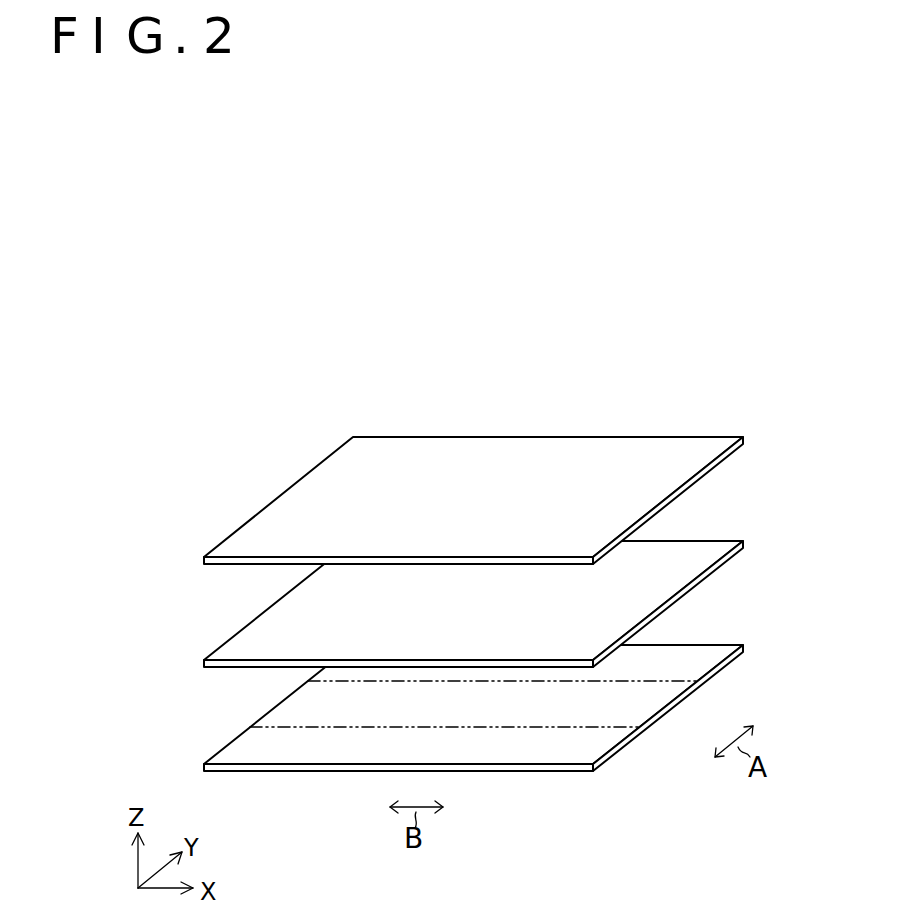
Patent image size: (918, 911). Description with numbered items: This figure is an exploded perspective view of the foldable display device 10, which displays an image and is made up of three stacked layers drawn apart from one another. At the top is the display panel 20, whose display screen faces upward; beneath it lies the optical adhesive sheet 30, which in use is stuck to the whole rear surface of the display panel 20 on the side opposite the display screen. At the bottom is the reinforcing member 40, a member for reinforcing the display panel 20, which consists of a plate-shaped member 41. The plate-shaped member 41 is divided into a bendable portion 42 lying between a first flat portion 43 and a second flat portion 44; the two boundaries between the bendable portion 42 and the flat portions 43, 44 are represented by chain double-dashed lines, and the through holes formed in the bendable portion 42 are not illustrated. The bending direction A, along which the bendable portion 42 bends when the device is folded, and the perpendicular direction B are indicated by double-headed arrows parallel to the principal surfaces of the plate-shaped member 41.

The display device 10 is at (339, 403).
The display panel 20 is at (697, 450).
The optical adhesive sheet 30 is at (697, 553).
The reinforcing member 40 is at (740, 635).
The plate-shaped member 41 is at (693, 643).
The bendable portion 42 is at (660, 700).
The first flat portion 43 is at (605, 745).
The second flat portion 44 is at (704, 660).